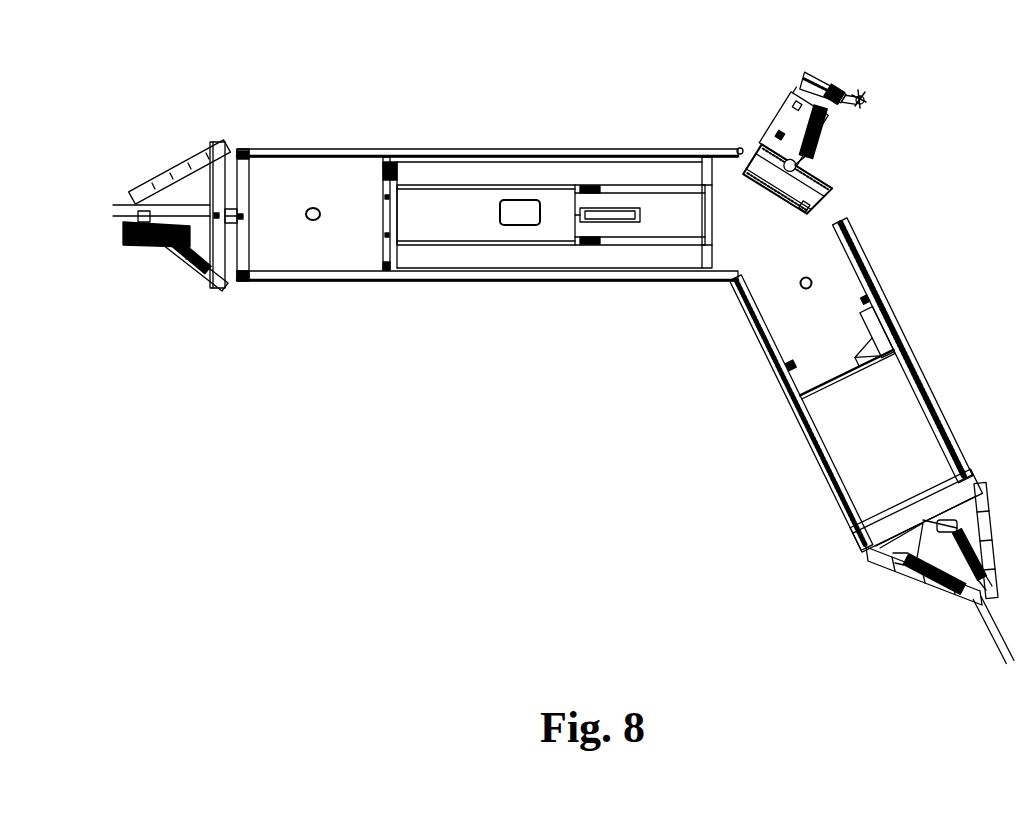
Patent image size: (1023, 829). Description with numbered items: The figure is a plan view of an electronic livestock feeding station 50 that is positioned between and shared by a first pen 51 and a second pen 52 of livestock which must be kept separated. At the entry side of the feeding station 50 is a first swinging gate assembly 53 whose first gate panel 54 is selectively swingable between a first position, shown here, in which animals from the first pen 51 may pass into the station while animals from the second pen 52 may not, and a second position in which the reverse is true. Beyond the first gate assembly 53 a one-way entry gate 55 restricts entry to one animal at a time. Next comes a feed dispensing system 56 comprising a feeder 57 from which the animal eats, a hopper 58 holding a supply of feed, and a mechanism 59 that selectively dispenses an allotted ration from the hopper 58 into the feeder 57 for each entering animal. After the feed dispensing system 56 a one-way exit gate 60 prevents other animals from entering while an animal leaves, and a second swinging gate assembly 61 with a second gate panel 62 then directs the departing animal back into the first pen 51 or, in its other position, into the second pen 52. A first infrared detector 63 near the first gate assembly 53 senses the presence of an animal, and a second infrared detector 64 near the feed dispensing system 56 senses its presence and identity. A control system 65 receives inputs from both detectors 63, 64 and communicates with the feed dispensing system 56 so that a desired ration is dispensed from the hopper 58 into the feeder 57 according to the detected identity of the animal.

The electronic livestock feeding station 50 is at (382, 432).
The first pen 51 is at (490, 167).
The second pen 52 is at (741, 384).
The first swinging gate assembly 53 is at (166, 253).
The first gate panel 54 is at (186, 250).
The one-way entry gate 55 is at (372, 152).
The feed dispensing system 56 is at (862, 101).
The feeder 57 is at (767, 200).
The hopper 58 is at (803, 85).
The mechanism for selectively dispensing feed 59 is at (818, 143).
The one-way exit gate 60 is at (878, 331).
The second swinging gate assembly 61 is at (897, 568).
The second gate panel 62 is at (931, 586).
The first infrared detector 63 is at (314, 206).
The second infrared detector 64 is at (813, 281).
The control system 65 is at (530, 208).